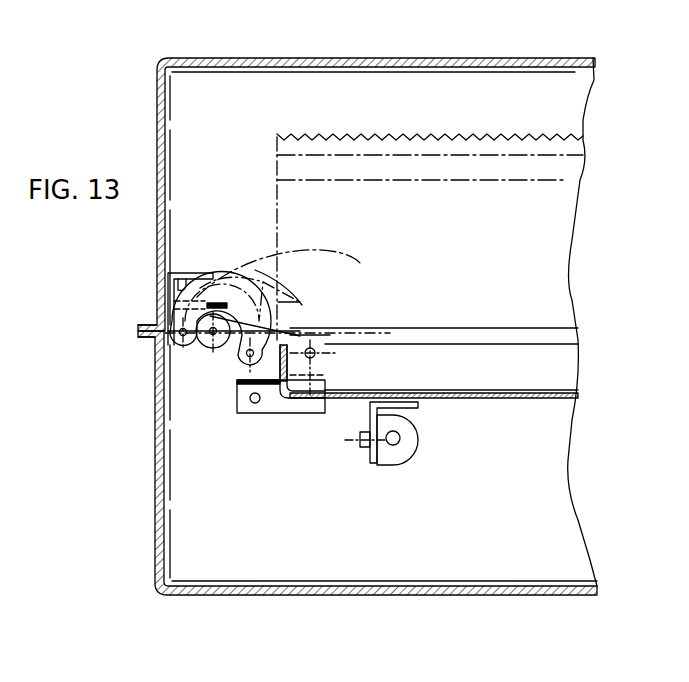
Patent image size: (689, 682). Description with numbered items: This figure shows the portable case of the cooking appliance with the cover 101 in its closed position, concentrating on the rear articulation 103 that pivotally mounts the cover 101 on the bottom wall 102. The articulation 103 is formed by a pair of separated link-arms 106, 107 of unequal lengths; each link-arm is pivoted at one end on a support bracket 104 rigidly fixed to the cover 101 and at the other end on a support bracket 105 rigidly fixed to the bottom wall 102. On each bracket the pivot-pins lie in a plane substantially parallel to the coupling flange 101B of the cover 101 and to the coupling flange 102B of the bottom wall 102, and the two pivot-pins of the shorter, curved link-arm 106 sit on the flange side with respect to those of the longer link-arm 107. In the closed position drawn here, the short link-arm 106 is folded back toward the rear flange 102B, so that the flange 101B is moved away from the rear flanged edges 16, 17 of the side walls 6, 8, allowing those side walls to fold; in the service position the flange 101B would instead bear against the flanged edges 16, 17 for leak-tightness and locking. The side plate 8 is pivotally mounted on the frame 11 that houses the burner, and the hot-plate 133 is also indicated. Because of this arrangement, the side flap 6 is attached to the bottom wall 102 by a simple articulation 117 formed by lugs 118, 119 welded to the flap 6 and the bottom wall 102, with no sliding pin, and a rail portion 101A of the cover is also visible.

The cover 101 is at (268, 55).
The horizontal rail of casing 101A is at (435, 328).
The flange of the cover 101B is at (157, 323).
The bottom wall 102 is at (419, 599).
The flange of the bottom wall 102B is at (142, 338).
The articulation 103 is at (198, 357).
The support bracket 104 is at (170, 278).
The support bracket 105 is at (267, 404).
The link-arm 106 is at (216, 280).
The link-arm 107 is at (228, 340).
The plate 8 is at (295, 238).
The frame 11 is at (287, 170).
The flanged edge 16 is at (323, 373).
The flanged edge 17 is at (300, 297).
The articulation 117 is at (362, 450).
The lug 118 is at (410, 405).
The lug 119 is at (405, 460).
The hot-plate 133 is at (385, 136).
The sheet-metal plate 6 is at (541, 378).